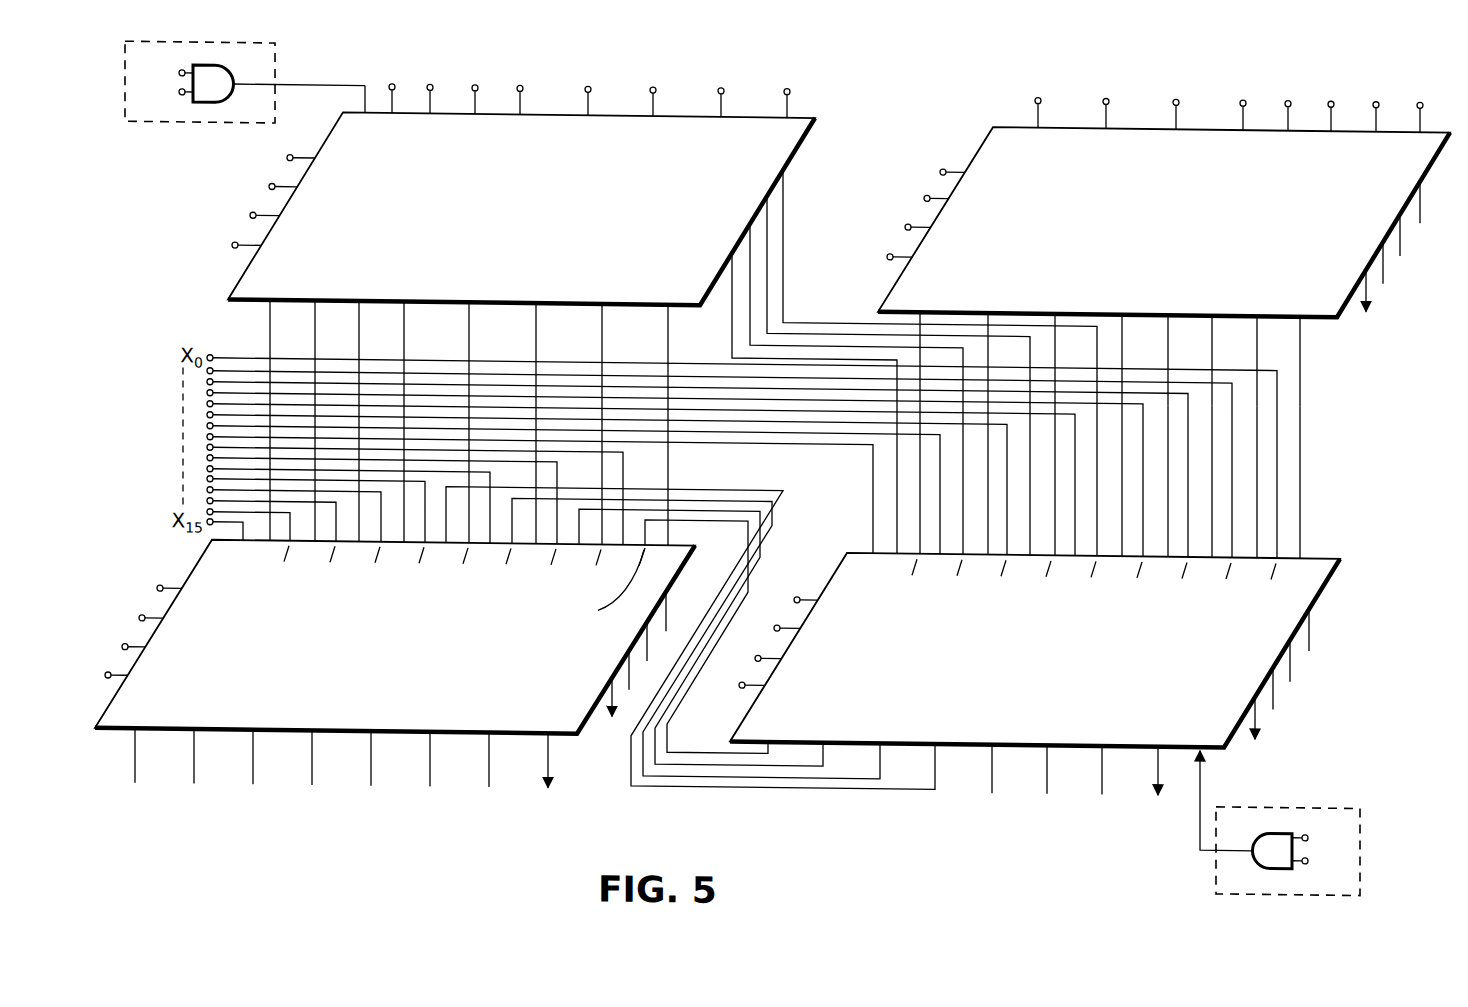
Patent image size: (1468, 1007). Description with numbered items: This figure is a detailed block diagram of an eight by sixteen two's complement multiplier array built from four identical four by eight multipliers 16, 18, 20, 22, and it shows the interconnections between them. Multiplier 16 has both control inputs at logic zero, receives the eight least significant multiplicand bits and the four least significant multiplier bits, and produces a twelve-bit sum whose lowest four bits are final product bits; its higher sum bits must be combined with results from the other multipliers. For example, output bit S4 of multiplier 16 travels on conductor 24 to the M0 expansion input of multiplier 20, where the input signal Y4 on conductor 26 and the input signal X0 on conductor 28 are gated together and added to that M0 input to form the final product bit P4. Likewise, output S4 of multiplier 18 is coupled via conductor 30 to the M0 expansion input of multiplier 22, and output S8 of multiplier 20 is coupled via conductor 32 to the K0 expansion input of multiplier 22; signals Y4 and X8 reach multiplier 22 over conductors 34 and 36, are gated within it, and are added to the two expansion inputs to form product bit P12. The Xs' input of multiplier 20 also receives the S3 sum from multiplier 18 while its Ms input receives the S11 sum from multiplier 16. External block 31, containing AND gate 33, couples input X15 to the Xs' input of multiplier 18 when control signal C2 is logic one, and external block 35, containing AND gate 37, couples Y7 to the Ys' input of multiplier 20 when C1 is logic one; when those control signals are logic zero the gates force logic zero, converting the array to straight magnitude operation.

The multiplier 16 is at (1158, 188).
The multiplier 18 is at (513, 185).
The multiplier 20 is at (999, 633).
The multiplier 22 is at (372, 628).
The conductor 24 is at (1300, 351).
The conductor 26 is at (807, 596).
The conductor 28 is at (1300, 426).
The conductor 30 is at (670, 336).
The external block 31 is at (171, 129).
The conductor 32 is at (692, 787).
The AND gate 33 is at (240, 106).
The conductor 34 is at (170, 590).
The external block 35 is at (1303, 801).
The conductor 36 is at (625, 466).
The AND gate 37 is at (1263, 830).